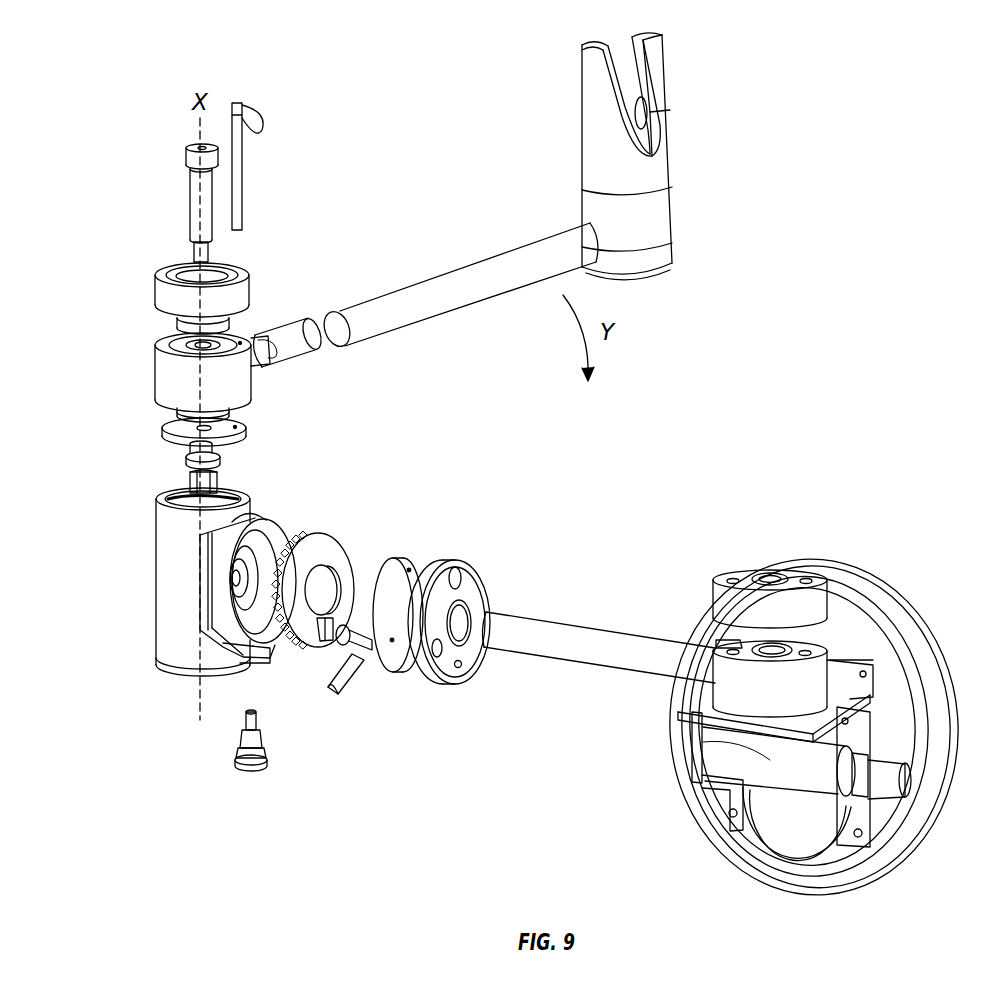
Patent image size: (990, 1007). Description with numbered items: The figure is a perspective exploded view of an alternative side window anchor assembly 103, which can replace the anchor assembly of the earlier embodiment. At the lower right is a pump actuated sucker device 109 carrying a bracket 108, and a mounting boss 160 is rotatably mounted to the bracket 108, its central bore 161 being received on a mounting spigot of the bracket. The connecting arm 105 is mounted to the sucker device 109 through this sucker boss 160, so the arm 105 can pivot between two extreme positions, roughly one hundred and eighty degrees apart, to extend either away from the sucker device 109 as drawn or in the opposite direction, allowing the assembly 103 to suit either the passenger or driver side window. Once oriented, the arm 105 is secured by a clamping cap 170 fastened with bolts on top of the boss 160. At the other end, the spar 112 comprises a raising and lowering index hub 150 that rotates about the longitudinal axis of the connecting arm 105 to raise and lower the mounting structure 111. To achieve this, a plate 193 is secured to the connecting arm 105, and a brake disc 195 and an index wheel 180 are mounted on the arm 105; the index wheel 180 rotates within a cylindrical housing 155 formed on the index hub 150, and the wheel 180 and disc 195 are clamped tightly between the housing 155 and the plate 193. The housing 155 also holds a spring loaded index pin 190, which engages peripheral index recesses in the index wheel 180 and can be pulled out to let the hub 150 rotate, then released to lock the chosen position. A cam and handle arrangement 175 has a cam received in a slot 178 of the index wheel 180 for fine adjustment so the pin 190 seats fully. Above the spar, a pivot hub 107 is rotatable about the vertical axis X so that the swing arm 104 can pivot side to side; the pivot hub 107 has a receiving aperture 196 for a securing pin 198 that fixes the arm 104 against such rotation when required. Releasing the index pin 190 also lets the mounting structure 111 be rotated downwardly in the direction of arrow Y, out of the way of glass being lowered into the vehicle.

The side window anchor assembly 103 is at (738, 428).
The swing arm 104 is at (447, 290).
The connecting arm 105 is at (583, 641).
The pivot hub 107 is at (160, 388).
The bracket 108 is at (700, 708).
The pump actuated sucker device 109 is at (764, 855).
The mounting structure 111 is at (658, 168).
The spar 112 is at (140, 471).
The index hub 150 is at (175, 545).
The cylindrical housing 155 is at (212, 610).
The mounting boss 160 is at (728, 670).
The central bore 161 is at (735, 644).
The clamping cap 170 is at (750, 575).
The cam and handle arrangement 175 is at (336, 678).
The slot 178 is at (322, 642).
The index wheel 180 is at (313, 530).
The index pin 190 is at (246, 734).
The plate 193 is at (468, 578).
The brake disc 195 is at (409, 569).
The receiving aperture 196 is at (275, 357).
The securing pin 198 is at (238, 180).